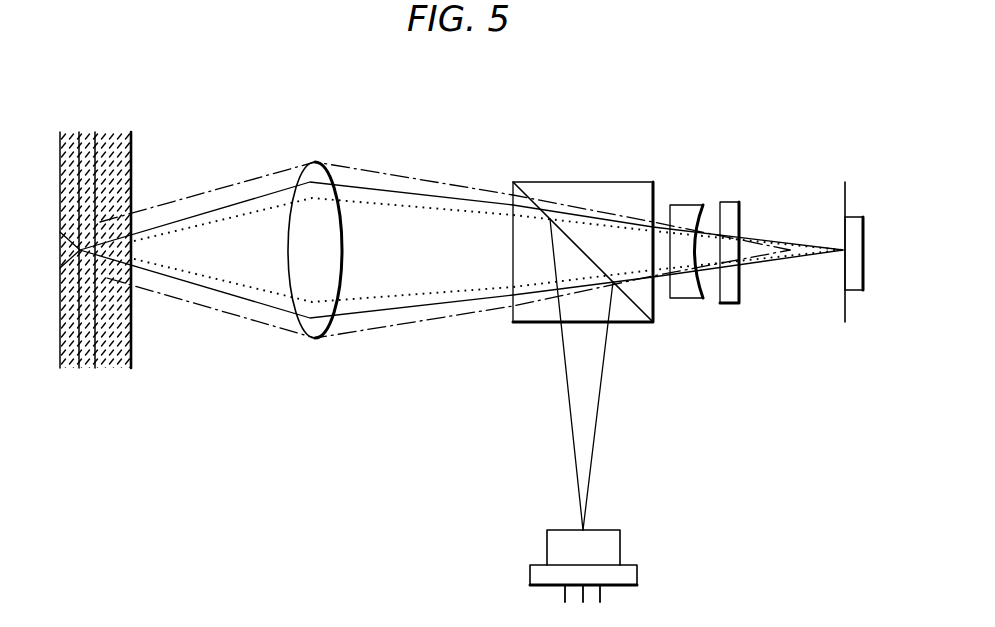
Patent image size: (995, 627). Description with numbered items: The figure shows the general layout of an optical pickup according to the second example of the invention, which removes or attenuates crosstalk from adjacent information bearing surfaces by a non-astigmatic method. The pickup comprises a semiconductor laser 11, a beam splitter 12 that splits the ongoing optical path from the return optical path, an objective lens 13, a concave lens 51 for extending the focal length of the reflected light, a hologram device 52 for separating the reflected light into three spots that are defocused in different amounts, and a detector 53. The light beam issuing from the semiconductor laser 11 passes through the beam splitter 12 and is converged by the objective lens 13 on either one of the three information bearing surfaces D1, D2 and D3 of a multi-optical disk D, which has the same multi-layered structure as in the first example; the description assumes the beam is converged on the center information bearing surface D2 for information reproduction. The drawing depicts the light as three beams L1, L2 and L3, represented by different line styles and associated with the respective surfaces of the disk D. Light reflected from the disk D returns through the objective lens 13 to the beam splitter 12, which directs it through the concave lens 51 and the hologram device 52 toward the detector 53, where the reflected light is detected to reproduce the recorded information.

The multi-optical disk D is at (112, 132).
The information bearing surface D1 is at (60, 368).
The center information bearing surface D2 is at (79, 368).
The information bearing surface D3 is at (95, 368).
The semiconductor laser 11 is at (637, 582).
The beam splitter 12 is at (579, 182).
The objective lens 13 is at (313, 160).
The concave lens 51 is at (685, 203).
The hologram device 52 is at (728, 200).
The detector 53 is at (857, 217).
The light beam focused on first layer L1 is at (253, 323).
The light beam focused on second layer L2 is at (372, 312).
The light beam focused on third layer L3 is at (447, 290).